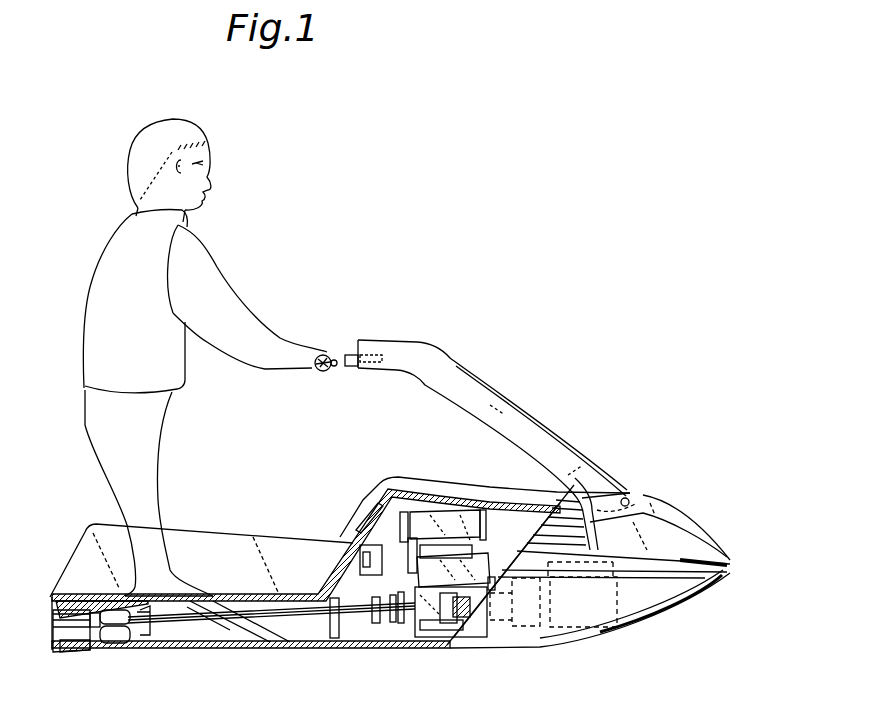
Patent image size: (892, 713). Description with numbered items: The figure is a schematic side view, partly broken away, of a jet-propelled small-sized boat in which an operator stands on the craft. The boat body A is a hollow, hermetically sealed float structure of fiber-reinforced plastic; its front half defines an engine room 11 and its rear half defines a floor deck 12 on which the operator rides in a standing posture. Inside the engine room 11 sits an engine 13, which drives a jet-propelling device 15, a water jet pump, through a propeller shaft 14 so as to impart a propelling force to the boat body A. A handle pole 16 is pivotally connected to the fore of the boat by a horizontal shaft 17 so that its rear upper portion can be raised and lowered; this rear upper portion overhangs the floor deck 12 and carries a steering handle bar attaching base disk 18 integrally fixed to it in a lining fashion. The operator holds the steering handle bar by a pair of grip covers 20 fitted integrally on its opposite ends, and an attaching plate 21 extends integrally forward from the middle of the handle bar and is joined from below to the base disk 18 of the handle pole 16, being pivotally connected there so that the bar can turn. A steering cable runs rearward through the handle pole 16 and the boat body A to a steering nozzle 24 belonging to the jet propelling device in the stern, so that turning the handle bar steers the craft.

The engine room 11 is at (500, 525).
The floor deck 12 is at (225, 597).
The engine 13 is at (445, 517).
The propeller shaft 14 is at (200, 625).
The jet-propelling device (water jet pump) 15 is at (100, 647).
The handle pole 16 is at (552, 440).
The horizontal shaft 17 is at (630, 503).
The steering handle bar attaching base disk 18 is at (350, 355).
The grip covers 20 is at (325, 364).
The attaching plate 21 is at (352, 366).
The steering nozzle 24 is at (65, 650).
The boat body A is at (481, 657).